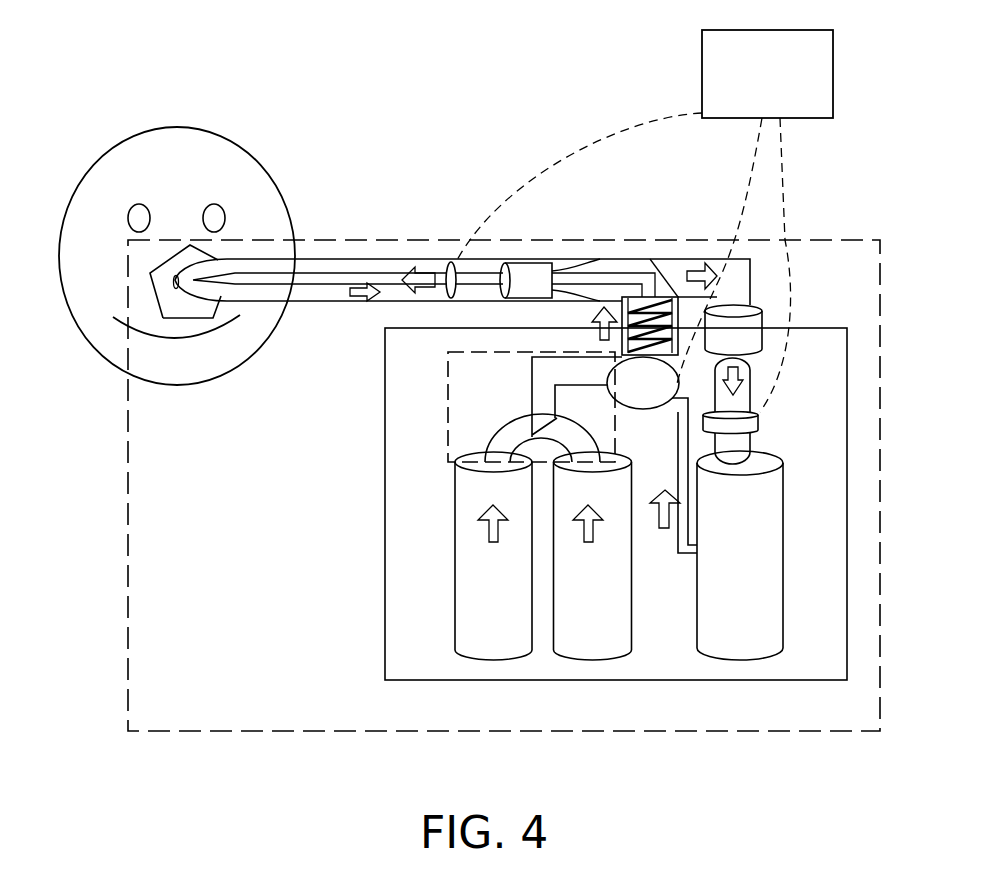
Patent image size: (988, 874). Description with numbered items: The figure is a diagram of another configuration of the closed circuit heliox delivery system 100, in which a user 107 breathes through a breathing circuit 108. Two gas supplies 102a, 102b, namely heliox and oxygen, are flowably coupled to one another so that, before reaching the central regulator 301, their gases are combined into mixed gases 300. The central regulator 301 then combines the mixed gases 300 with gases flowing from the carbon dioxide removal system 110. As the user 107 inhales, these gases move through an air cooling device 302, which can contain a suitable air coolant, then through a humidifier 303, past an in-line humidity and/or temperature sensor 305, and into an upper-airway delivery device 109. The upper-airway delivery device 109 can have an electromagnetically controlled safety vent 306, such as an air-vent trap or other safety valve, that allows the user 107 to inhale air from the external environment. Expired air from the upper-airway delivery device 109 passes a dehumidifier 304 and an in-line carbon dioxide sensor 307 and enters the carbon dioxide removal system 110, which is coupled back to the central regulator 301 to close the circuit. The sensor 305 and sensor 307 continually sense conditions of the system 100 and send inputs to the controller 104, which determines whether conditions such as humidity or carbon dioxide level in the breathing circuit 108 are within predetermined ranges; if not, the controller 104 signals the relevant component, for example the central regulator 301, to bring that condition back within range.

The closed circuit heliox delivery system 100 is at (482, 133).
The controller 104 is at (702, 35).
The user 107 is at (118, 162).
The breathing circuit 108 is at (128, 651).
The upper-airway delivery device 109 is at (203, 256).
The carbon dioxide removal system 110 is at (768, 522).
The mixed gases 300 is at (447, 428).
The central regulator 301 is at (637, 377).
The air cooling device 302 is at (672, 262).
The humidifier 303 is at (524, 263).
The dehumidifier 304 is at (762, 305).
The in-line humidity and/or temperature sensor 305 is at (451, 262).
The electromagnetically controlled safety vent 306 is at (176, 288).
The in-line carbon dioxide sensor 307 is at (758, 420).
The gas supply 102a is at (473, 660).
The gas supply 102b is at (590, 660).